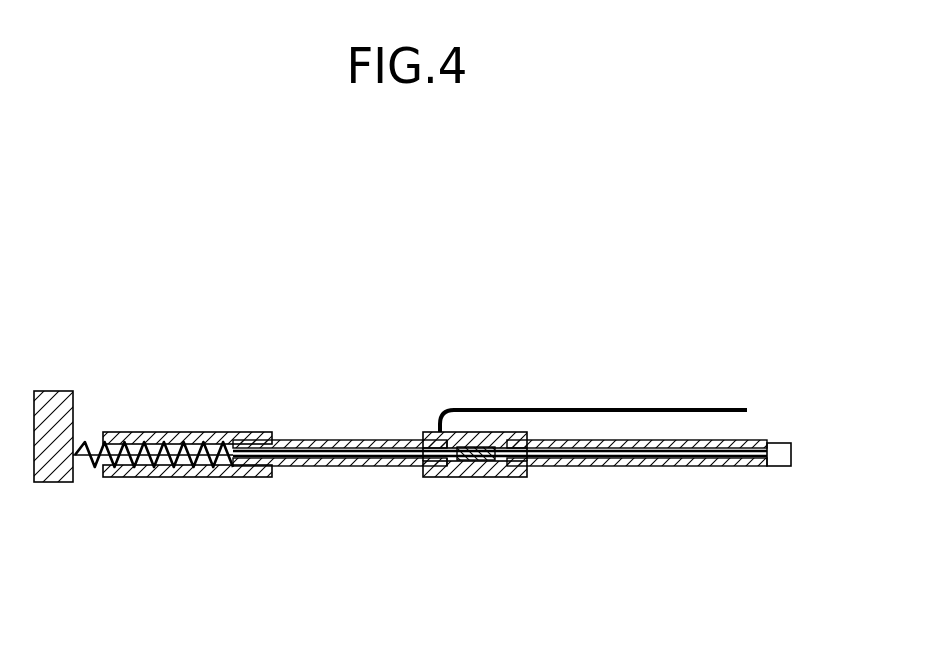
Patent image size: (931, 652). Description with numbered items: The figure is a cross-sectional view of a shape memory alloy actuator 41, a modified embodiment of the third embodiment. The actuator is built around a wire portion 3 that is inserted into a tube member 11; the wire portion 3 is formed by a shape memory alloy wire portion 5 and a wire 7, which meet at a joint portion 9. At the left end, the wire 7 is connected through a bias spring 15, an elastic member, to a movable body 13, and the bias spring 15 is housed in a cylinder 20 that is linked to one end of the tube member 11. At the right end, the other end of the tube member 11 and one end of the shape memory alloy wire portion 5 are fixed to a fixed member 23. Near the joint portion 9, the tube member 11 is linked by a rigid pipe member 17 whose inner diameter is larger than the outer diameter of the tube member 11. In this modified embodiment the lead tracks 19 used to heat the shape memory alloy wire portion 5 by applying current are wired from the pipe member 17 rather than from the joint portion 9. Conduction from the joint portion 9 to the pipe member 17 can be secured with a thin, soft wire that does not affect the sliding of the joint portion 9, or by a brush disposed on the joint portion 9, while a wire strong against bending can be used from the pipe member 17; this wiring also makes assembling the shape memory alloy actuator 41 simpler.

The wire portion 3 is at (380, 557).
The shape memory alloy wire portion 5 is at (546, 467).
The wire 7 is at (401, 458).
The joint portion 9 is at (467, 442).
The tube member 11 is at (305, 440).
The movable body 13 is at (61, 391).
The bias spring 15 is at (83, 468).
The pipe member 17 is at (478, 445).
The lead tracks 19 is at (694, 410).
The cylinder 20 is at (159, 432).
The fixed member 23 is at (775, 442).
The shape memory alloy actuator 41 is at (650, 348).